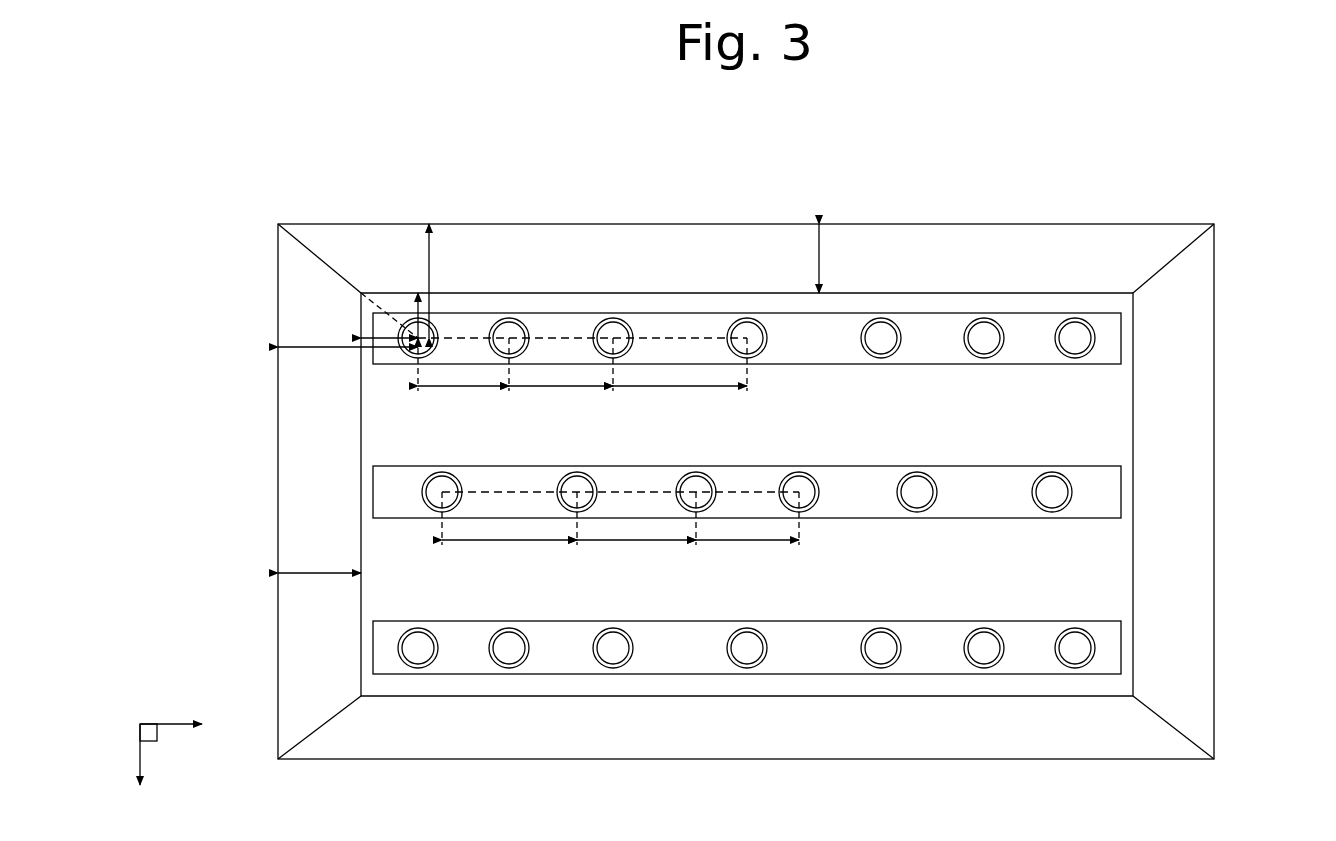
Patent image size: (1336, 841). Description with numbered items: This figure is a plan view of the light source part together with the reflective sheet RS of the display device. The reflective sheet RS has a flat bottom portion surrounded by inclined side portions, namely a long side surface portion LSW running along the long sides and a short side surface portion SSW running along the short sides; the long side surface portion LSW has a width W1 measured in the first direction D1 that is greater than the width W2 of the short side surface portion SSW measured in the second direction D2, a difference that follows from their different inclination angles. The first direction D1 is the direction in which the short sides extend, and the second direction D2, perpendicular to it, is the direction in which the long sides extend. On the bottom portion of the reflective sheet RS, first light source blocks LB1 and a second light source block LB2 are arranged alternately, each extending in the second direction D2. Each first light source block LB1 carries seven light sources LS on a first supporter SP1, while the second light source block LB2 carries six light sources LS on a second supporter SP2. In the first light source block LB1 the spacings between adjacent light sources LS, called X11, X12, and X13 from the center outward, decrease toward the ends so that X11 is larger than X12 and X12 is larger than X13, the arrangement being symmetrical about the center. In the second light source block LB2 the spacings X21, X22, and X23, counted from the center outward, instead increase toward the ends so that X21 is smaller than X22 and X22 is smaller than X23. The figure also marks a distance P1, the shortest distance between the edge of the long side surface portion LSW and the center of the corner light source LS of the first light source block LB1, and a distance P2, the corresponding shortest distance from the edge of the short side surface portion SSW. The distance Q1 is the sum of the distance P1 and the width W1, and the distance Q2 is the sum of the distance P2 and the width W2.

The reflective sheet RS is at (351, 222).
The long side surface portion LSW is at (677, 236).
The short side surface portion SSW is at (293, 467).
The width of the long side surface portion W1 is at (839, 258).
The width of the short side surface portion W2 is at (319, 559).
The first light source block LB1 is at (1121, 339).
The second light source block LB2 is at (1121, 492).
The light source LS is at (509, 326).
The first supporter SP1 is at (465, 318).
The second supporter SP2 is at (847, 477).
The first distance X13 is at (463, 375).
The first distance X12 is at (561, 375).
The first distance X11 is at (680, 375).
The second distance X23 is at (509, 530).
The second distance X22 is at (636, 530).
The second distance X21 is at (747, 530).
The distance P1 is at (413, 302).
The distance Q1 is at (447, 281).
The distance P2 is at (385, 338).
The distance Q2 is at (348, 362).
The first direction D1 is at (143, 767).
The second direction D2 is at (187, 727).